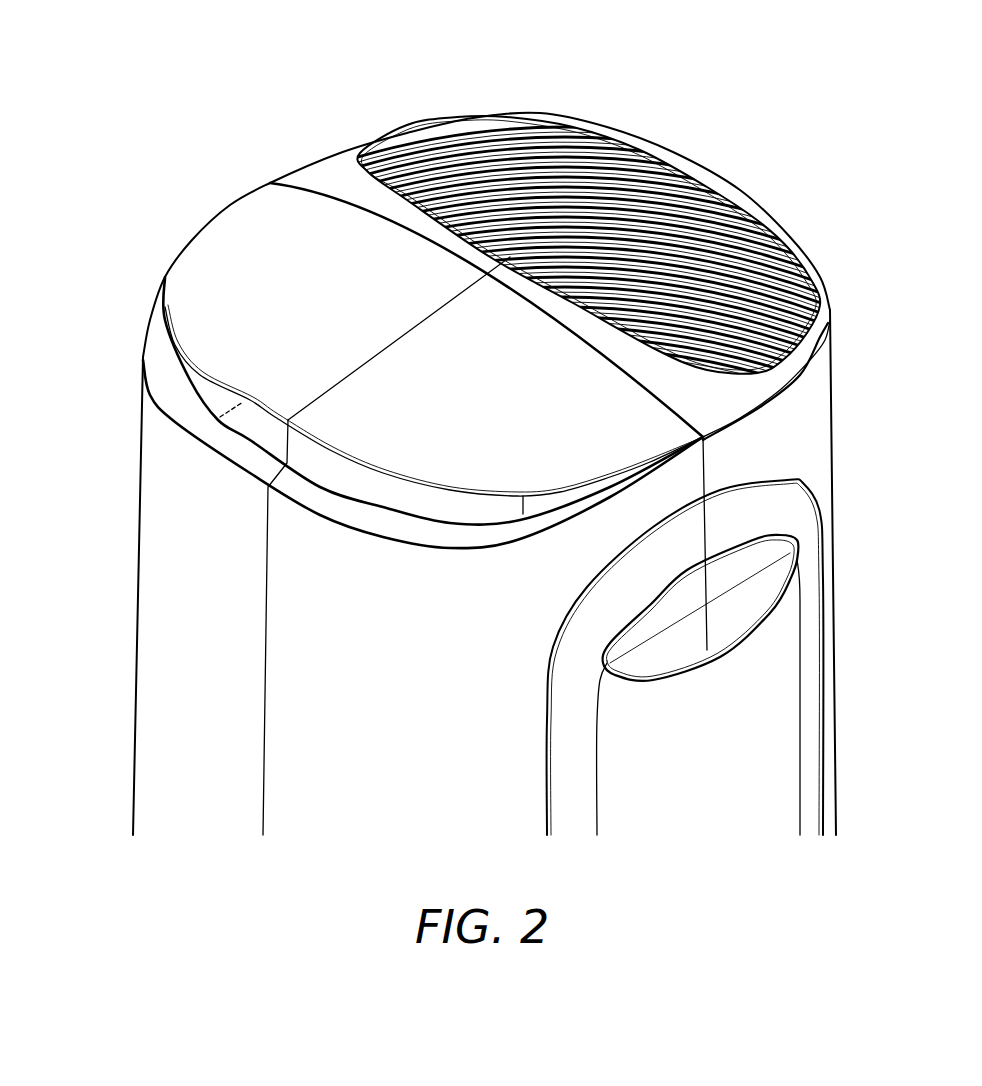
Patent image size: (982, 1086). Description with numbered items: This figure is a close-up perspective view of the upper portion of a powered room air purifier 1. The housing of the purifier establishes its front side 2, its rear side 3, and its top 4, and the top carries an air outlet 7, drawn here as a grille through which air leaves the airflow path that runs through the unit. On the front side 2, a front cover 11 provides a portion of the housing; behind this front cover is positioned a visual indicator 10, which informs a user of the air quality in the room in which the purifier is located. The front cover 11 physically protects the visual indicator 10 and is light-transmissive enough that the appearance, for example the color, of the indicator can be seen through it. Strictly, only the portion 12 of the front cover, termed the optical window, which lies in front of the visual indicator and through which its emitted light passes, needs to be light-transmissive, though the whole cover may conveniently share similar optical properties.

The room air purifier 1 is at (185, 72).
The front side 2 is at (92, 552).
The rear side 3 is at (815, 210).
The top 4 is at (367, 108).
The air outlet 7 is at (508, 102).
The visual indicator 10 is at (257, 427).
The front cover 11 is at (217, 393).
The optical window 12 is at (245, 433).